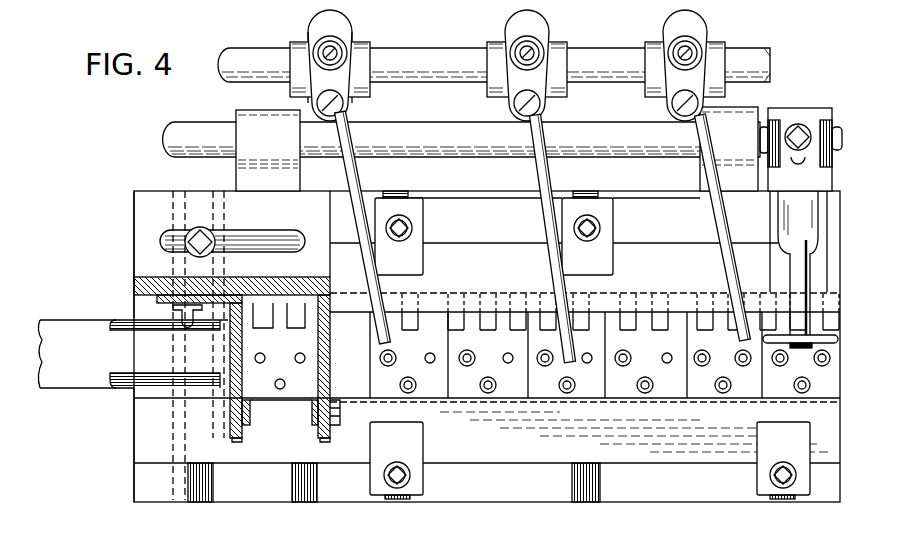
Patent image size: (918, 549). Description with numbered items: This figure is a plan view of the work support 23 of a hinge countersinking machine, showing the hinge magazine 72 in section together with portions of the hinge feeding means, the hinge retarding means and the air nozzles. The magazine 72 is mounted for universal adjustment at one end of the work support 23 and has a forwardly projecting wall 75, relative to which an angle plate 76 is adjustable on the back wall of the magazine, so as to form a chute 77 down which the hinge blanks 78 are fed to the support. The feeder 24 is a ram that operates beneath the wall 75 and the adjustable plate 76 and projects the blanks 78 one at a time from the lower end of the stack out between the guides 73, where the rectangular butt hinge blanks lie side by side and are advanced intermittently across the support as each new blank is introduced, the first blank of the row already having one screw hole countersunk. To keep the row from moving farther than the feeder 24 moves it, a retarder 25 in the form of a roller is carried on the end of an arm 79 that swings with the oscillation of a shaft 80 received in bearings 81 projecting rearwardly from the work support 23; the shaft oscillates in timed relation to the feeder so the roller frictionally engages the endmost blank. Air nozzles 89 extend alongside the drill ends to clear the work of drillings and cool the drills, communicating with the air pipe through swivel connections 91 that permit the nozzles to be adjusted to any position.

The work support 23 is at (153, 493).
The feeder 24 is at (80, 373).
The retarder 25 is at (762, 343).
The magazine 72 is at (153, 277).
The guides 73 is at (477, 270).
The forwardly projecting wall 75 is at (322, 437).
The angle plate 76 is at (238, 438).
The chute 77 is at (242, 343).
The hinge blanks 78 is at (265, 392).
The arm 79 is at (795, 257).
The shaft 80 is at (647, 152).
The bearings 81 is at (304, 178).
The air nozzle 89 is at (392, 323).
The swivel connections 91 is at (557, 36).